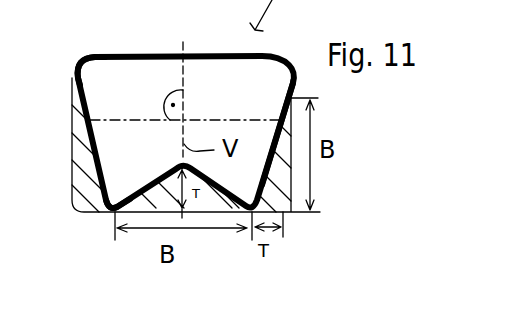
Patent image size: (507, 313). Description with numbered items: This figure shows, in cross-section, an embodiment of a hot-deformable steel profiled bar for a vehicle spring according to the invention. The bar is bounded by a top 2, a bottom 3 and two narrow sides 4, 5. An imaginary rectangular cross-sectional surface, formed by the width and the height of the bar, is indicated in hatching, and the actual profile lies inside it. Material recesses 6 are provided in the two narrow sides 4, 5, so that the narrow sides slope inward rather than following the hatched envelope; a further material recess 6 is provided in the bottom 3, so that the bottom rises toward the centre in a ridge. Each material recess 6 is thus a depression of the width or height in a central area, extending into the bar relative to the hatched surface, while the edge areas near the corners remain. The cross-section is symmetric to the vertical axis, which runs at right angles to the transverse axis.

The top 2 is at (122, 56).
The bottom 3 is at (110, 210).
The narrow side 4 is at (296, 76).
The narrow side 5 is at (77, 66).
The material recess 6 is at (61, 190).